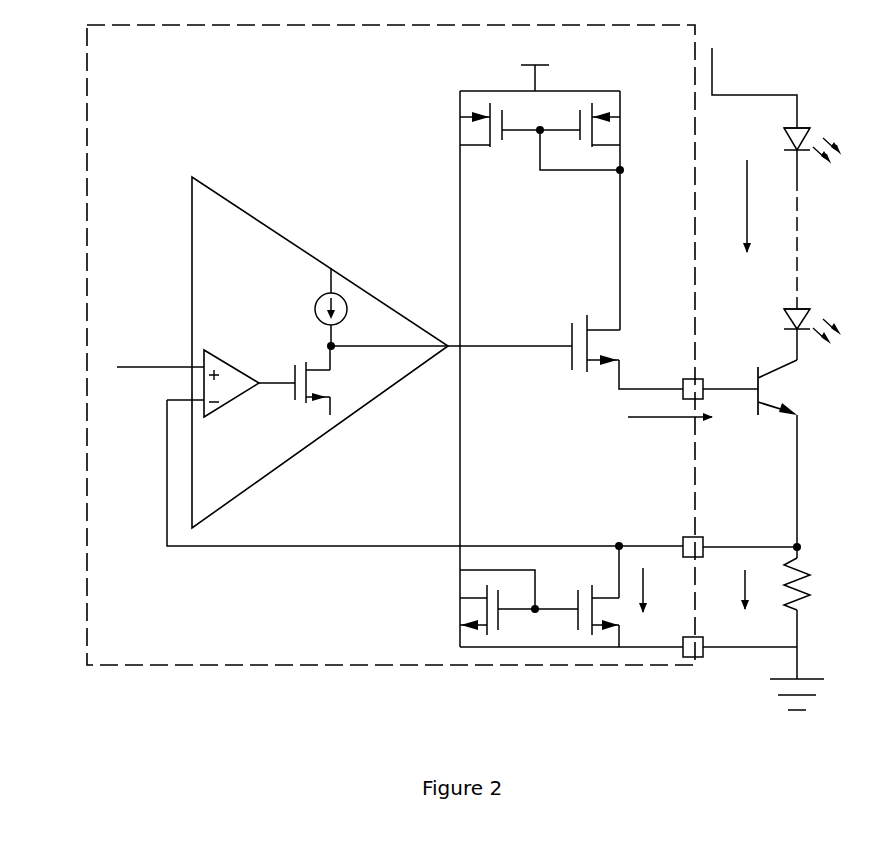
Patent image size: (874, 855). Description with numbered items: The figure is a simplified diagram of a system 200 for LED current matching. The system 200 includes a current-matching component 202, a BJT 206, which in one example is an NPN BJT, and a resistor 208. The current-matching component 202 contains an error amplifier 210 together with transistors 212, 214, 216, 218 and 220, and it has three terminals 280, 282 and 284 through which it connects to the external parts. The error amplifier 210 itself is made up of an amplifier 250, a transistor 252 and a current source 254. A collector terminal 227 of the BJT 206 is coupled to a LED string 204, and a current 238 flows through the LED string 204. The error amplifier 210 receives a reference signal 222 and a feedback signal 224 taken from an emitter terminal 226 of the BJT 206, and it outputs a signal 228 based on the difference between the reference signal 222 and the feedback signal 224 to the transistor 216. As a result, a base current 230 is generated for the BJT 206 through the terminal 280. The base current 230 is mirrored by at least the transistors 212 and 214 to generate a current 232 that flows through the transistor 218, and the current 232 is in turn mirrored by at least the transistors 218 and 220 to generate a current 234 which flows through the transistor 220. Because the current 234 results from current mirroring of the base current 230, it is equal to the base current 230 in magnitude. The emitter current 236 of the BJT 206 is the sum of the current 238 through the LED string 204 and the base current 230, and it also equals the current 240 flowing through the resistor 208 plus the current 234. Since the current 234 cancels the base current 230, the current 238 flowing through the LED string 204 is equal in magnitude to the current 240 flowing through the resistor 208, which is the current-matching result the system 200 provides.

The system 200 is at (150, 702).
The current-matching component 202 is at (86, 665).
The LED string 204 is at (810, 309).
The BJT 206 is at (797, 408).
The resistor 208 is at (802, 563).
The error amplifier 210 is at (222, 197).
The transistor 212 is at (490, 148).
The transistor 214 is at (592, 147).
The transistor 216 is at (587, 372).
The transistor 218 is at (504, 610).
The transistor 220 is at (588, 592).
The reference signal 222 is at (154, 367).
The feedback signal 224 is at (167, 546).
The emitter terminal 226 is at (797, 428).
The collector terminal 227 is at (797, 360).
The signal 228 is at (480, 346).
The base current 230 is at (626, 389).
The current 232 is at (460, 494).
The current 234 is at (620, 550).
The emitter current 236 is at (797, 487).
The current 238 is at (797, 108).
The current 240 is at (797, 626).
The amplifier 250 is at (232, 410).
The transistor 252 is at (324, 384).
The current source 254 is at (347, 312).
The terminal 280 is at (703, 378).
The terminal 282 is at (703, 538).
The terminal 284 is at (703, 652).